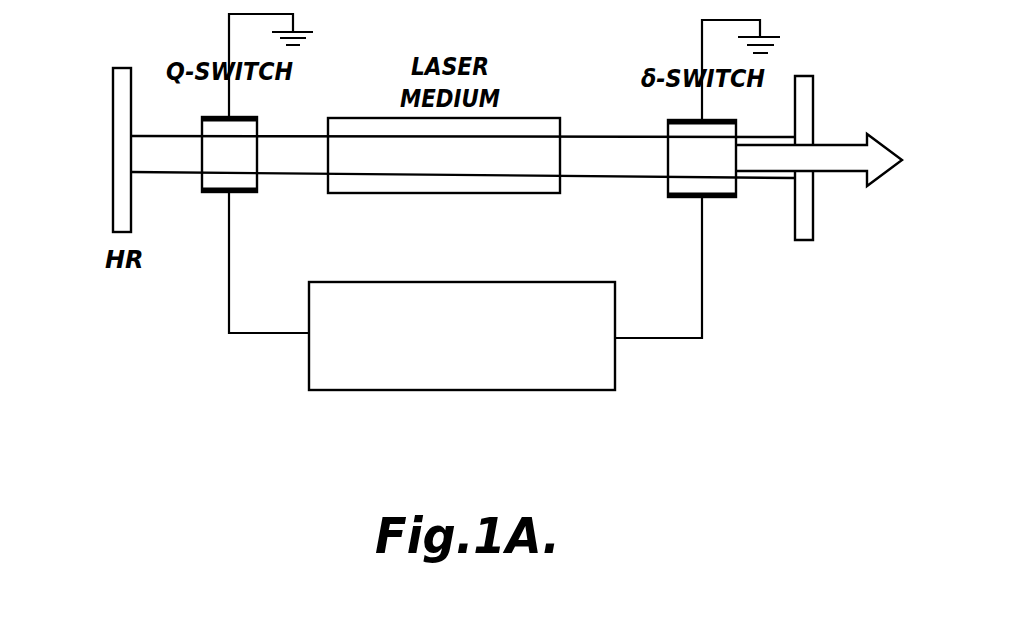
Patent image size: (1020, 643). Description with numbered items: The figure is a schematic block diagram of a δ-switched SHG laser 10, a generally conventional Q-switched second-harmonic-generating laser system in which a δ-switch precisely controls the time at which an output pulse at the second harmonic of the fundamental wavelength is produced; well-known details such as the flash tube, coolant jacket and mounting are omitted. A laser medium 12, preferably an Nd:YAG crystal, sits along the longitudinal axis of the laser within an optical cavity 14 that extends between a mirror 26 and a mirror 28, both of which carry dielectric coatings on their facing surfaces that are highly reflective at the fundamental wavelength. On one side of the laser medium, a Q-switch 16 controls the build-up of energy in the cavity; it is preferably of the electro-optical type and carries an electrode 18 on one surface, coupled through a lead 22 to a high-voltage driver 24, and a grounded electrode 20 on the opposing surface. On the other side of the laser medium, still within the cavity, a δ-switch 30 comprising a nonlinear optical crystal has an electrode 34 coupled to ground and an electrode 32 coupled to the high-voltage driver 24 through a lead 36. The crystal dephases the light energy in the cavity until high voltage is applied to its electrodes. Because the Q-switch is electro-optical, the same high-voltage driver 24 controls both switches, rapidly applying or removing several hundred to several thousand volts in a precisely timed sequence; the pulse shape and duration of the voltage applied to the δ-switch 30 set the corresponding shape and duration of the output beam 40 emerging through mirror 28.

The δ-switched SHG laser 10 is at (165, 390).
The laser medium 12 is at (395, 194).
The optical cavity 14 is at (535, 150).
The Q-switch 16 is at (199, 178).
The electrode 18 is at (218, 193).
The grounded electrode 20 is at (213, 115).
The lead 22 is at (229, 293).
The high-voltage driver 24 is at (617, 377).
The mirror 26 is at (113, 172).
The mirror 28 is at (806, 220).
The δ-switch 30 is at (670, 181).
The electrode 32 is at (687, 198).
The electrode 34 is at (668, 121).
The lead 36 is at (703, 310).
The output laser beam 40 is at (835, 152).